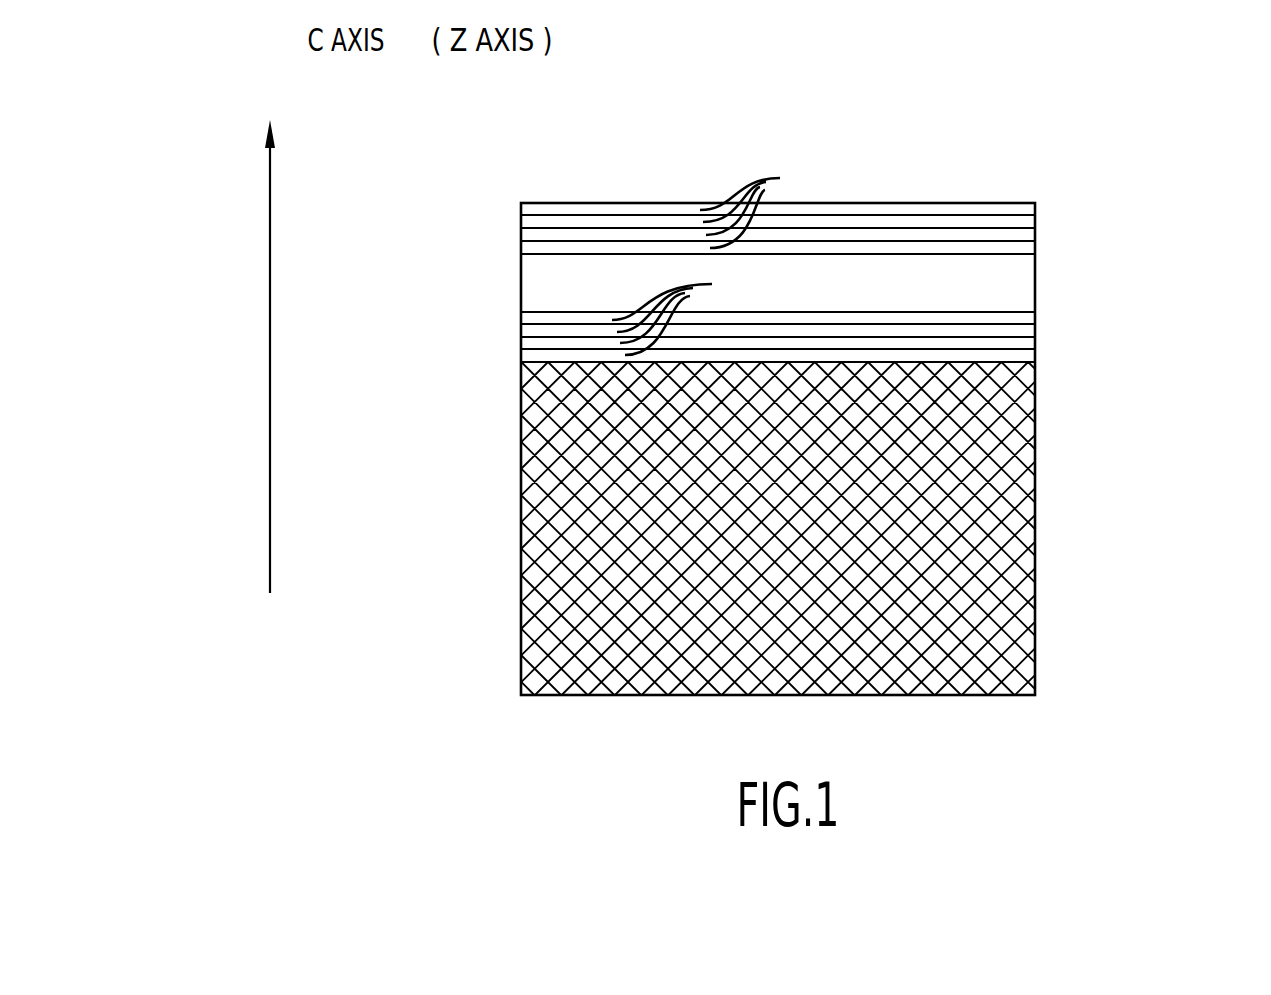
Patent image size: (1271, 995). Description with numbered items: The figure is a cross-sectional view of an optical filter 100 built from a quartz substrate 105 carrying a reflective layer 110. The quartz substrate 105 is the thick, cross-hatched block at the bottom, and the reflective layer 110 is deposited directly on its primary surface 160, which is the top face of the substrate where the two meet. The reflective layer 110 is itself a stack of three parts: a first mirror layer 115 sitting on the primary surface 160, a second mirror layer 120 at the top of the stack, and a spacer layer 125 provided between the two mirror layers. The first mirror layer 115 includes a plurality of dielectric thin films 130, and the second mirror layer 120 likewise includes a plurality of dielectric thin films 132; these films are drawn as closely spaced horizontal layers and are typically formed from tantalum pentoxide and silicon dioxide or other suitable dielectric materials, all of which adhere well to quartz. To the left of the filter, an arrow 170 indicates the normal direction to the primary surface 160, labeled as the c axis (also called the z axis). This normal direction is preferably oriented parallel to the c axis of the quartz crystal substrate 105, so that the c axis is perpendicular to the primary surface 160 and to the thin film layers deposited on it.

The optical filter 100 is at (1152, 603).
The quartz substrate 105 is at (998, 682).
The reflective layer 110 is at (762, 282).
The first mirror layer 115 is at (514, 308).
The second mirror layer 120 is at (514, 203).
The spacer layer 125 is at (550, 287).
The dielectric thin films 130 is at (712, 284).
The dielectric thin films 132 is at (780, 178).
The primary surface 160 is at (1012, 360).
The arrow 170 is at (270, 546).